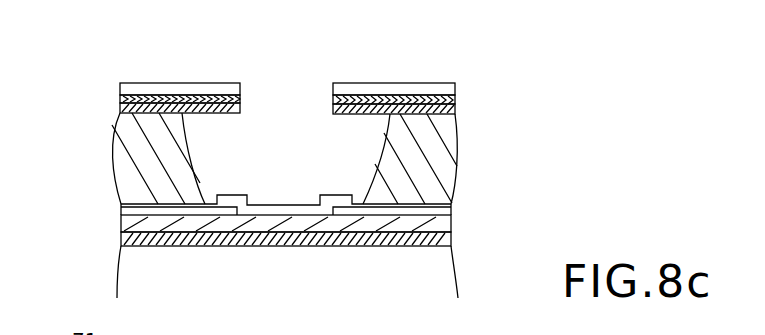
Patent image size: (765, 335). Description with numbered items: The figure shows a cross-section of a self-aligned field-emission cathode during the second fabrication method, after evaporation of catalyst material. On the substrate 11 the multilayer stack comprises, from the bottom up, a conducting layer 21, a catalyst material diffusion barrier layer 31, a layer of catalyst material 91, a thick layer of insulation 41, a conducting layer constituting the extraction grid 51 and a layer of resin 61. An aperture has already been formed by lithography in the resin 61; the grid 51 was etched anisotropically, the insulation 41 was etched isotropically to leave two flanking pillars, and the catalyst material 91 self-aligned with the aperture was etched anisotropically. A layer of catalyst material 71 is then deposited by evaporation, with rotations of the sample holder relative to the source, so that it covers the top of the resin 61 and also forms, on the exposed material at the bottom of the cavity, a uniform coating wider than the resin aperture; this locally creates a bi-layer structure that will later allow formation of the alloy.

The substrate 11 is at (152, 275).
The conducting layer 21 is at (130, 251).
The catalyst material diffusion barrier layer 31 is at (130, 228).
The thick layer of insulation 41 is at (130, 160).
The extraction grid 51 is at (120, 124).
The layer of resin 61 is at (147, 100).
The layer of catalyst material 71 is at (182, 89).
The layer of catalyst material 91 is at (128, 210).